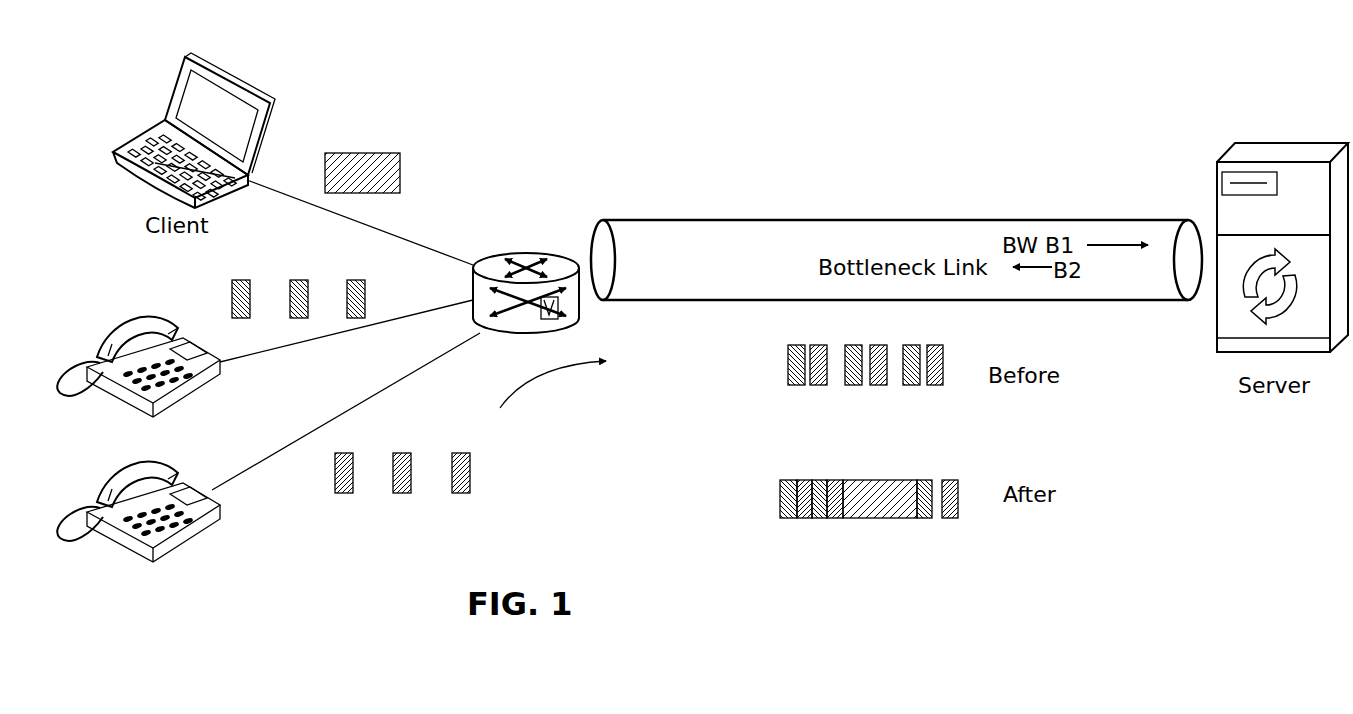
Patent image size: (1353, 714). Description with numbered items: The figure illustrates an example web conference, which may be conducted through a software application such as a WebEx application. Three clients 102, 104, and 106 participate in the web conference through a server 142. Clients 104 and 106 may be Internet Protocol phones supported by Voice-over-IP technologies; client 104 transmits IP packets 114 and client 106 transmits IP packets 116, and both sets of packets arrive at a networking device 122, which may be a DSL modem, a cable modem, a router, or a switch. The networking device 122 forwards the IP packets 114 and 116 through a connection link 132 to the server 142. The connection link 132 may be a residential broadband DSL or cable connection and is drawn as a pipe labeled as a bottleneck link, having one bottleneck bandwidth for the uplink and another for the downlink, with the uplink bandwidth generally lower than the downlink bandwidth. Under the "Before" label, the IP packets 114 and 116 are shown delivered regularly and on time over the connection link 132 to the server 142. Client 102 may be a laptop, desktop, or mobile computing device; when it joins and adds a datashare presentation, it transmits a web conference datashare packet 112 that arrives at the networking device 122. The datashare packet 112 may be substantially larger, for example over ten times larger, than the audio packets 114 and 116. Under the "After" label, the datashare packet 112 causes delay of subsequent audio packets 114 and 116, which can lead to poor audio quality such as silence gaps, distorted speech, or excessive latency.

The client 102 is at (218, 70).
The client 104 is at (140, 337).
The client 106 is at (153, 477).
The web conference datashare packet 112 is at (365, 153).
The IP packets 114 is at (354, 282).
The IP packets 116 is at (460, 455).
The networking device 122 is at (540, 253).
The connection link 132 is at (896, 260).
The server 142 is at (1283, 142).